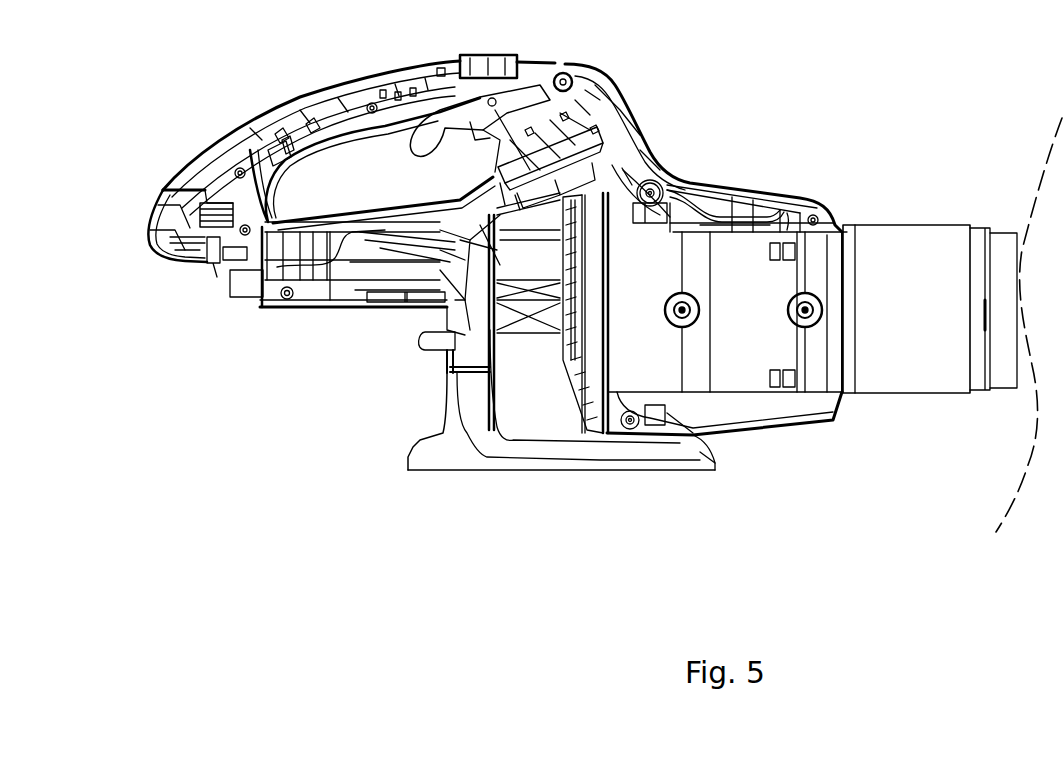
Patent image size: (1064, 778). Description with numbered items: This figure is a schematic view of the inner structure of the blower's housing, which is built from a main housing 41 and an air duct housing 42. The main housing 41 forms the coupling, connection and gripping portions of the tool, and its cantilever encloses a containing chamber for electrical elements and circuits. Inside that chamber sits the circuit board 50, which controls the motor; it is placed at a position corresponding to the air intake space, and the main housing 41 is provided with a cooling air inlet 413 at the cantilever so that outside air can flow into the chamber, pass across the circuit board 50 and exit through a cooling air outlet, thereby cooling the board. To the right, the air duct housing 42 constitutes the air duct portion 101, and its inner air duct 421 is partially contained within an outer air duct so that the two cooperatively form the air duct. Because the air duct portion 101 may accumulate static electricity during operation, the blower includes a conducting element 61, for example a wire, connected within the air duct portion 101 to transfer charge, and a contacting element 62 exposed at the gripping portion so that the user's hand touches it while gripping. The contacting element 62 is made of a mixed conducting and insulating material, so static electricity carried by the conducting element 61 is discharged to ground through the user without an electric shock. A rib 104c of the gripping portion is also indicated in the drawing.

The main housing 41 is at (593, 77).
The air duct housing 42 is at (888, 262).
The circuit board 50 is at (557, 67).
The conducting element 61 is at (247, 163).
The contacting element 62 is at (352, 86).
The air duct portion 101 is at (907, 180).
The rib 104c is at (297, 130).
The cooling air inlet 413 is at (550, 203).
The inner air duct 421 is at (730, 250).